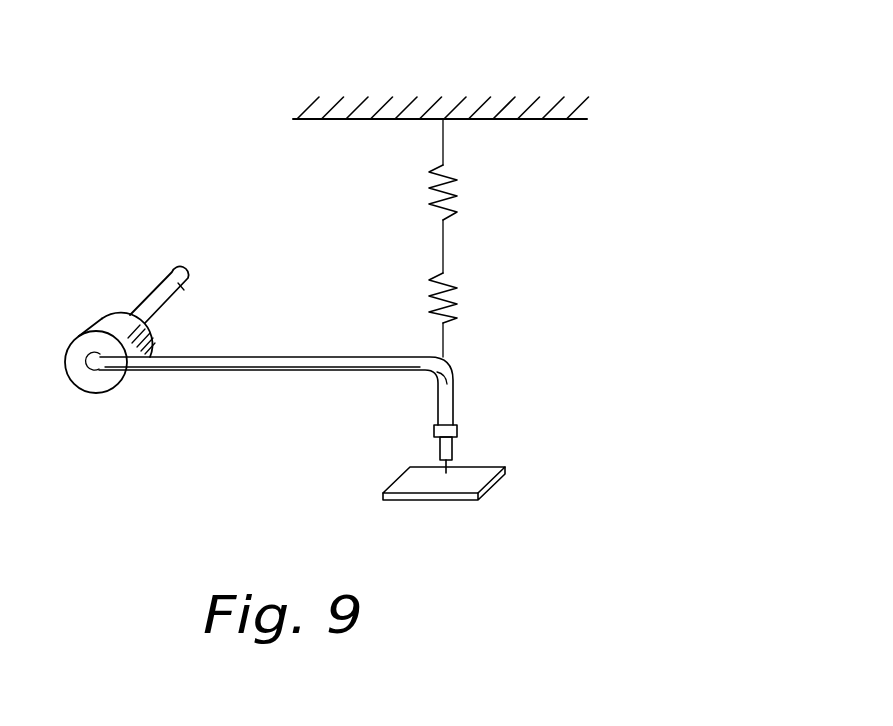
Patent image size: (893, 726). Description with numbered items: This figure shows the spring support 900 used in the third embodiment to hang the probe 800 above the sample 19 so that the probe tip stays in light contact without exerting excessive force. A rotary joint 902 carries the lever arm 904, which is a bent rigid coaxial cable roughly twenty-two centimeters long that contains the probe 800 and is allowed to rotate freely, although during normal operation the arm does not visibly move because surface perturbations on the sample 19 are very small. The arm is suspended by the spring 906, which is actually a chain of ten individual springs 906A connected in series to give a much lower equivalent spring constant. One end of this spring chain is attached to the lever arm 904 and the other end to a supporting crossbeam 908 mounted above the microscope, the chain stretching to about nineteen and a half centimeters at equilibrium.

The supporting crossbeam 908 is at (542, 107).
The spring 906 is at (425, 238).
The individual springs 906A is at (432, 278).
The spring support 900 is at (137, 258).
The rotary joint 902 is at (100, 373).
The lever arm 904 is at (281, 371).
The probe 800 is at (452, 452).
The sample 19 is at (473, 478).